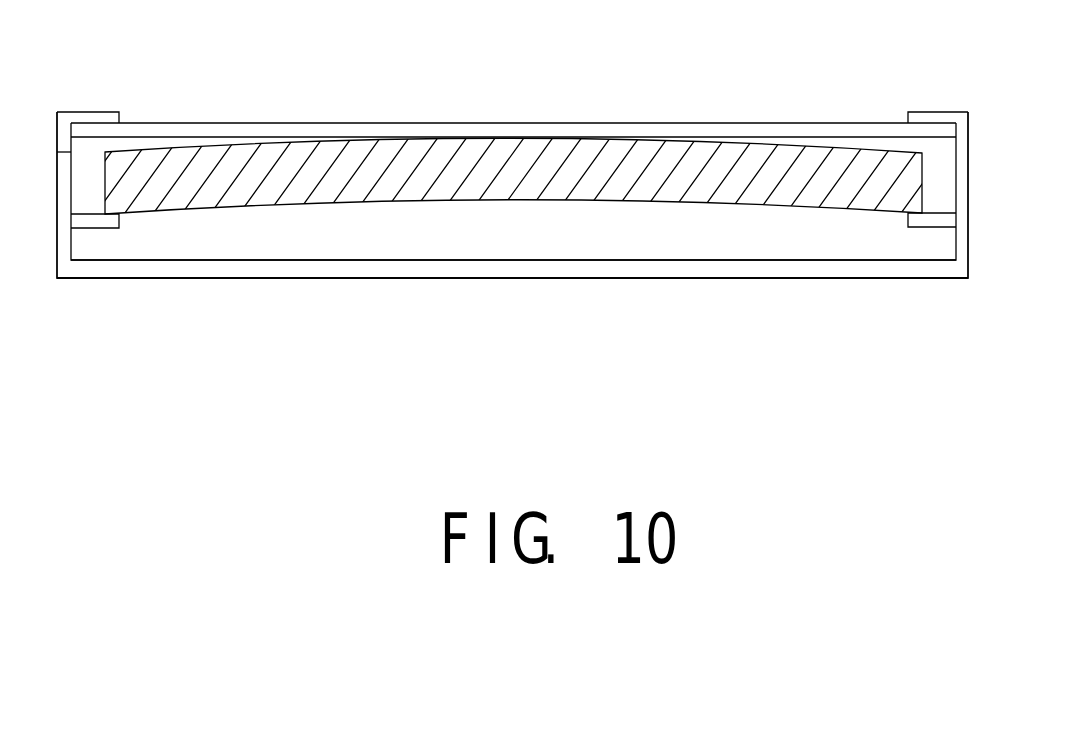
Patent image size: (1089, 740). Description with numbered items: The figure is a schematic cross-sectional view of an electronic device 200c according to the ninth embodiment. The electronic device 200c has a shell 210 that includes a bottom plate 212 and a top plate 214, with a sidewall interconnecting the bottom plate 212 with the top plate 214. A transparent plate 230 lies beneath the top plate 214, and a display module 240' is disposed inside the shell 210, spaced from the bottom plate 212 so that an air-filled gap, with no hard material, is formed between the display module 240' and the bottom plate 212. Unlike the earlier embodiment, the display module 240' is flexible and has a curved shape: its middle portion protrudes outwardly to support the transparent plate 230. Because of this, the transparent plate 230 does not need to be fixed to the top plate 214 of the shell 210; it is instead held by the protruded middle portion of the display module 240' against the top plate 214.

The electronic device 200c is at (818, 387).
The shell 210 is at (962, 218).
The bottom plate 212 is at (667, 265).
The top plate 214 is at (93, 117).
The transparent plate 230 is at (258, 128).
The display module 240' is at (553, 177).